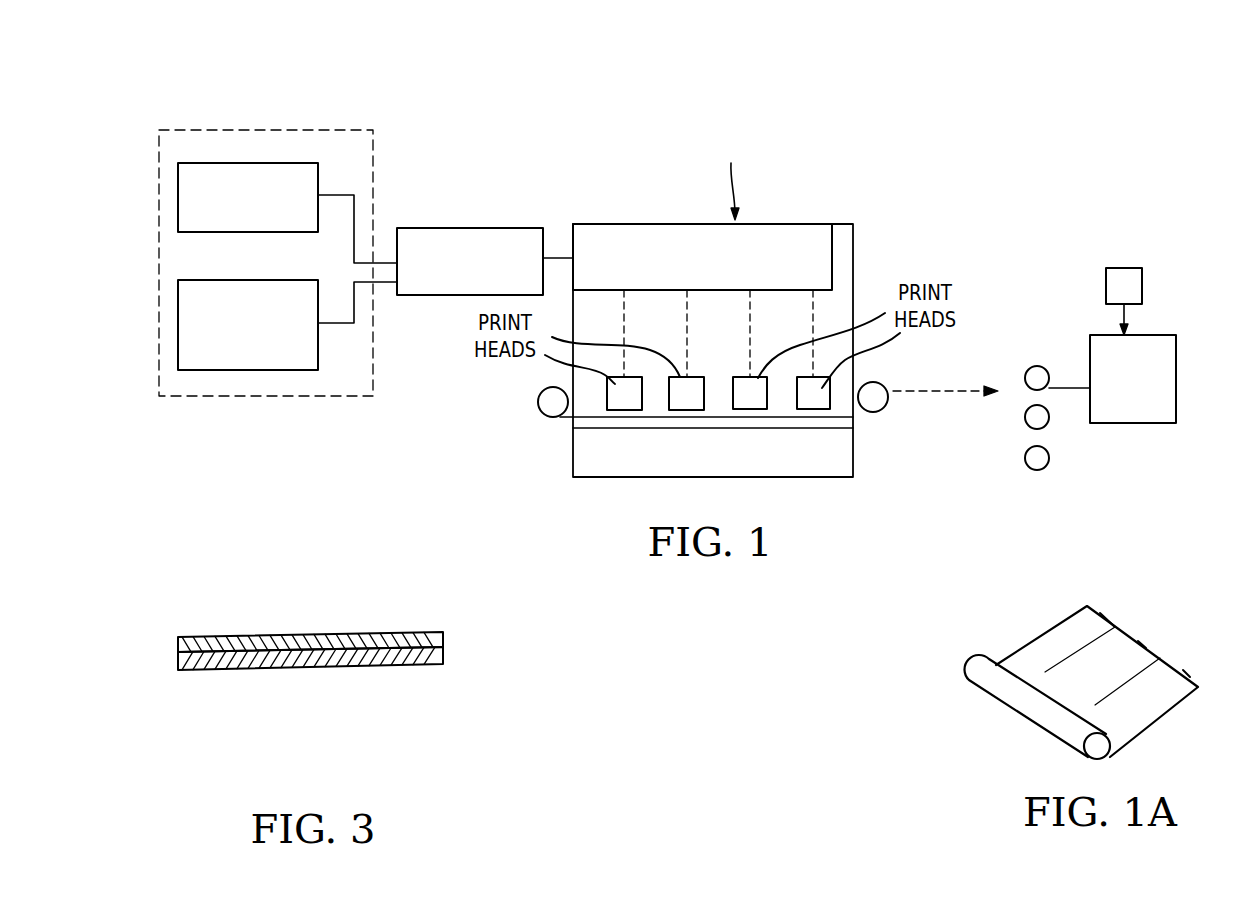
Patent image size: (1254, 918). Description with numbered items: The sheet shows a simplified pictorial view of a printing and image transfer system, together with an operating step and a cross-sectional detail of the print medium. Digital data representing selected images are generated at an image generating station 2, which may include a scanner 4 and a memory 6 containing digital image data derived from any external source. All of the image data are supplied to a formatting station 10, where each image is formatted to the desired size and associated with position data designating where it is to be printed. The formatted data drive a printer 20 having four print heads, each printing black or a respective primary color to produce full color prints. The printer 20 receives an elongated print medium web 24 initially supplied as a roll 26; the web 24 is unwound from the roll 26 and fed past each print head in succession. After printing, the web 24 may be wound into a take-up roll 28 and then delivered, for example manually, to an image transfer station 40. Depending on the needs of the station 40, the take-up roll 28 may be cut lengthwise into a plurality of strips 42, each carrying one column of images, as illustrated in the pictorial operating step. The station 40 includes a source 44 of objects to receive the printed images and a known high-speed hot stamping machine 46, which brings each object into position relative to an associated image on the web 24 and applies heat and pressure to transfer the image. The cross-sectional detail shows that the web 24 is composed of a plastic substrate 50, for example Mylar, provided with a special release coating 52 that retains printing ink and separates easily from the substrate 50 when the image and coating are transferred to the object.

In FIG. 1, the image generating station 2 is at (285, 108).
In FIG. 1, the scanner 4 is at (178, 196).
In FIG. 1, the memory 6 is at (178, 323).
In FIG. 1, the formatting station 10 is at (468, 228).
In FIG. 1, the printer 20 is at (832, 224).
In FIG. 1, the print medium web 24 is at (566, 418).
In FIG. 3, the print medium web 24 is at (310, 675).
In FIG. 1, the roll 26 is at (538, 402).
In FIG. 1, the take-up roll 28 is at (878, 412).
In FIG. 1A, the take-up roll 28 is at (1012, 703).
In FIG. 1, the image transfer station 40 is at (1157, 213).
In FIG. 1, the strips 42 is at (1029, 426).
In FIG. 1A, the strips 42 is at (1105, 615).
In FIG. 1, the source of objects 44 is at (1106, 282).
In FIG. 1, the hot stamping machine 46 is at (1176, 373).
In FIG. 3, the plastic substrate 50 is at (413, 668).
In FIG. 3, the release coating 52 is at (310, 635).